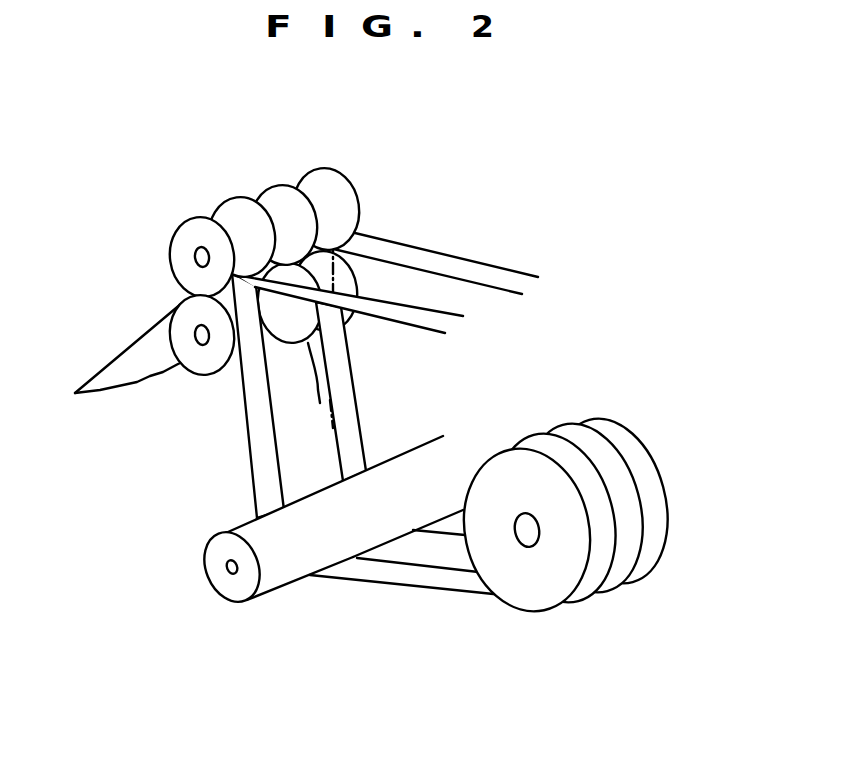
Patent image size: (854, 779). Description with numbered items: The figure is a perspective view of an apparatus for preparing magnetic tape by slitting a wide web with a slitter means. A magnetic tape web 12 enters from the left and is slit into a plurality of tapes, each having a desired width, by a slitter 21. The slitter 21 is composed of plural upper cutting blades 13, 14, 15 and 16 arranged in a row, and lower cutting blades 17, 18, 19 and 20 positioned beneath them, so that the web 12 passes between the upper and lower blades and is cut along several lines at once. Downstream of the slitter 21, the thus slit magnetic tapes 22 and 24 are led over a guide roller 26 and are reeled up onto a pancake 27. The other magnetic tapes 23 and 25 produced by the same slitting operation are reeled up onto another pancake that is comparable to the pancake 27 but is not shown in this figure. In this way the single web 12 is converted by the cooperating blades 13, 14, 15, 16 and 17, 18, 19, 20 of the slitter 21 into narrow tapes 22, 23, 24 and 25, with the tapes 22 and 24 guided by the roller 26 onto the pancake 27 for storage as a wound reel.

The magnetic tape web 12 is at (118, 356).
The upper cutting blade 13 is at (192, 217).
The upper cutting blade 14 is at (235, 203).
The upper cutting blade 15 is at (277, 193).
The upper cutting blade 16 is at (337, 193).
The lower cutting blade 17 is at (203, 377).
The lower cutting blade 18 is at (266, 346).
The lower cutting blade 19 is at (313, 346).
The lower cutting blade 20 is at (356, 277).
The slitter 21 is at (416, 205).
The magnetic tape 22 is at (258, 456).
The magnetic tape 23 is at (410, 313).
The magnetic tape 24 is at (352, 430).
The magnetic tape 25 is at (495, 267).
The guide roller 26 is at (288, 565).
The pancake 27 is at (537, 590).